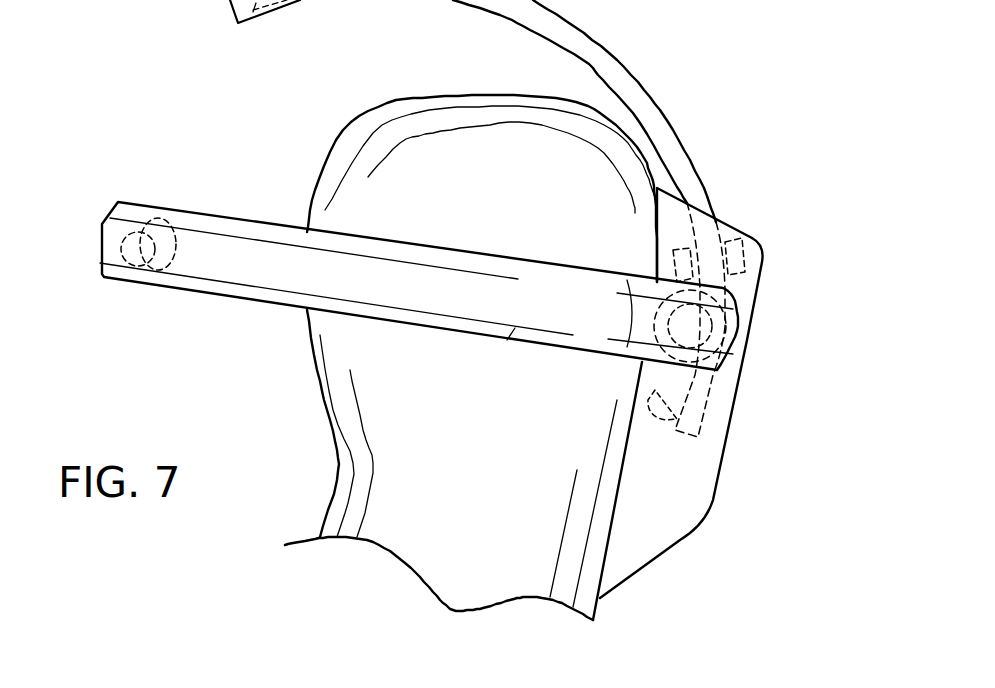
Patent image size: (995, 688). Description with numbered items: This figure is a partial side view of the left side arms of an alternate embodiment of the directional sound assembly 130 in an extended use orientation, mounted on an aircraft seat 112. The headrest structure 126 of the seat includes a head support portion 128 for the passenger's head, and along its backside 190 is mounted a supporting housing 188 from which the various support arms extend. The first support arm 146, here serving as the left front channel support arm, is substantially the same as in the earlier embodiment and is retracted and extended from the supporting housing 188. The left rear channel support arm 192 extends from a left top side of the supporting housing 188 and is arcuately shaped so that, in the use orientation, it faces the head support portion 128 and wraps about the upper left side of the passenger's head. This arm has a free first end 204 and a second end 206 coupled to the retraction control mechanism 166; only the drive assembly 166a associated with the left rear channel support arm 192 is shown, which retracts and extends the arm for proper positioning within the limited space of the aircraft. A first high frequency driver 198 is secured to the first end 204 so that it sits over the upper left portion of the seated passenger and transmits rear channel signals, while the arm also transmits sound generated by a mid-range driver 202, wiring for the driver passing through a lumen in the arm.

The aircraft seat 112 is at (335, 570).
The headrest structure 126 is at (515, 212).
The head support portion 128 is at (310, 362).
The directional sound assembly 130 is at (690, 95).
The first support arm 146 is at (225, 216).
The retraction control mechanism 166 is at (727, 200).
The drive assembly 166a is at (735, 238).
The supporting housing 188 is at (764, 258).
The backside 190 is at (597, 613).
The left rear channel support arm 192 is at (613, 57).
The first high frequency driver 198 is at (133, 255).
The mid-range driver 202 is at (658, 423).
The first end 204 is at (183, 292).
The second end 206 is at (710, 402).